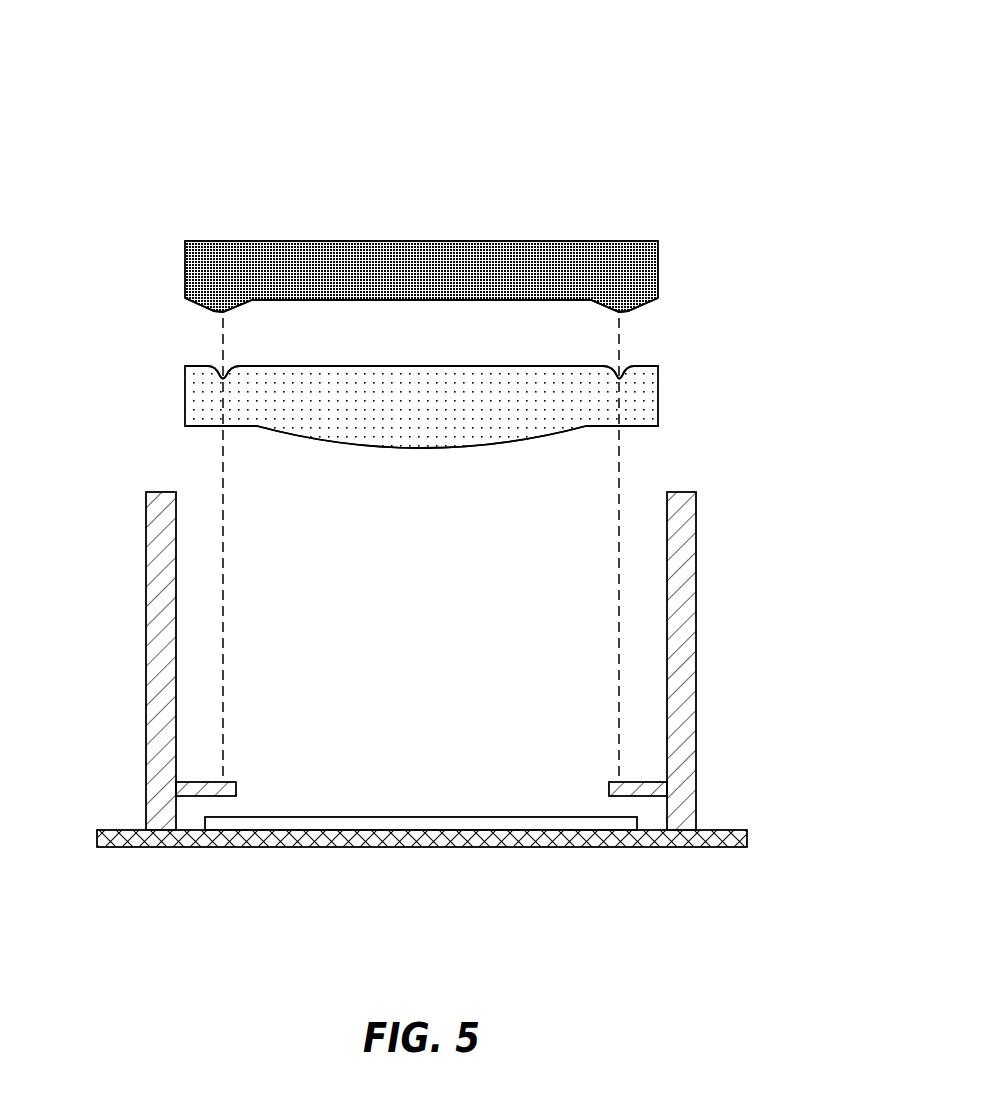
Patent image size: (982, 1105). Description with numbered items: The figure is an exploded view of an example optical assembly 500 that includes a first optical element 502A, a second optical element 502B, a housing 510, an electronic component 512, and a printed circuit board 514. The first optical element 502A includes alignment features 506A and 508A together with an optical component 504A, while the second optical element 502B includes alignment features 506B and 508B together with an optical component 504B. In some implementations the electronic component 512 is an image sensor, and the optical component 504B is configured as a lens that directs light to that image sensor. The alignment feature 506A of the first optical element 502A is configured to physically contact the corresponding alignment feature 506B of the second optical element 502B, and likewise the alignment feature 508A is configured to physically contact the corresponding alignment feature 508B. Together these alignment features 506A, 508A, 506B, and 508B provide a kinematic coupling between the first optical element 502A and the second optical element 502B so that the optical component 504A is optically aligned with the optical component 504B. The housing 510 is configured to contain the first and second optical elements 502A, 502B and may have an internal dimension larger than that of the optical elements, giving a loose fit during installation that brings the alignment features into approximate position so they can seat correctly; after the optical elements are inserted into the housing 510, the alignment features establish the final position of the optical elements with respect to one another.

The optical assembly 500 is at (790, 86).
The first optical element 502A is at (657, 258).
The second optical element 502B is at (650, 403).
The optical component 504A is at (422, 270).
The optical component 504B is at (418, 446).
The alignment feature 506A is at (628, 306).
The alignment feature 506B is at (623, 375).
The alignment feature 508A is at (208, 307).
The alignment feature 508B is at (222, 378).
The housing 510 is at (696, 740).
The electronic component 512 is at (361, 822).
The printed circuit board 514 is at (747, 840).